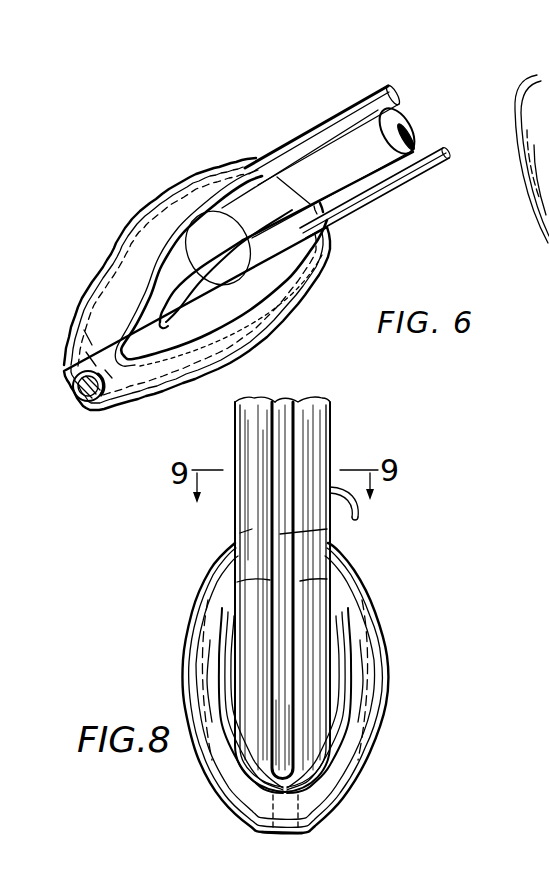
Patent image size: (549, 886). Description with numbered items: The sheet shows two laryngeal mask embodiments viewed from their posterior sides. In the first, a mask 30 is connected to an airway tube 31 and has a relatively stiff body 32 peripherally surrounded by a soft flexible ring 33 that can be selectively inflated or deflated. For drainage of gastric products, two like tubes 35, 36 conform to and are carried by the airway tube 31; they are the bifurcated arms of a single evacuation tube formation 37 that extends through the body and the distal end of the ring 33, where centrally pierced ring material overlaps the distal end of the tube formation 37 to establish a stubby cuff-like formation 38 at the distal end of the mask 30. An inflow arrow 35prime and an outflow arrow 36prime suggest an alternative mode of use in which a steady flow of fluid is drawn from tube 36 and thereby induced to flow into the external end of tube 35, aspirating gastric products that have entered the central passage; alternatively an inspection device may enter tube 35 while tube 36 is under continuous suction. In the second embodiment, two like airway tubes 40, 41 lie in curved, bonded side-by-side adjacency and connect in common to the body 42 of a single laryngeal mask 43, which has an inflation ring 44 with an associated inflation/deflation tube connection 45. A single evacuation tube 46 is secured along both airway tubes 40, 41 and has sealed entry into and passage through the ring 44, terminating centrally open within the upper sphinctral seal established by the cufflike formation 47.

In FIG. 6, the mask 30 is at (331, 259).
In FIG. 6, the airway tube 31 is at (332, 168).
In FIG. 6, the relatively stiff body 32 is at (220, 289).
In FIG. 6, the soft flexible ring 33 is at (290, 320).
In FIG. 6, the tube 35 is at (422, 162).
In FIG. 6, the arrow 35prime is at (452, 145).
In FIG. 6, the tube 36 is at (351, 106).
In FIG. 6, the arrow 36prime is at (402, 87).
In FIG. 6, the evacuation tube formation 37 is at (80, 306).
In FIG. 6, the cuff-like formation 38 is at (101, 403).
In FIG. 8, the airway tube 40 is at (248, 425).
In FIG. 8, the airway tube 41 is at (322, 435).
In FIG. 8, the body 42 is at (322, 687).
In FIG. 8, the laryngeal mask 43 is at (389, 620).
In FIG. 8, the inflation ring 44 is at (340, 772).
In FIG. 8, the inflation/deflation tube connection 45 is at (363, 514).
In FIG. 8, the evacuation tube 46 is at (298, 714).
In FIG. 8, the cufflike formation 47 is at (317, 829).